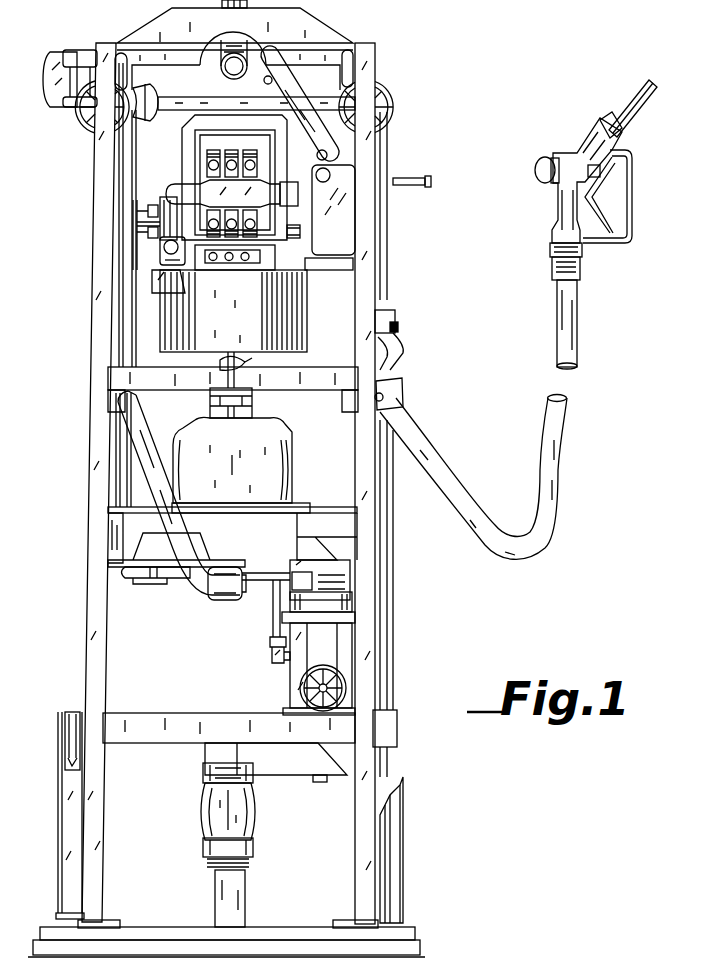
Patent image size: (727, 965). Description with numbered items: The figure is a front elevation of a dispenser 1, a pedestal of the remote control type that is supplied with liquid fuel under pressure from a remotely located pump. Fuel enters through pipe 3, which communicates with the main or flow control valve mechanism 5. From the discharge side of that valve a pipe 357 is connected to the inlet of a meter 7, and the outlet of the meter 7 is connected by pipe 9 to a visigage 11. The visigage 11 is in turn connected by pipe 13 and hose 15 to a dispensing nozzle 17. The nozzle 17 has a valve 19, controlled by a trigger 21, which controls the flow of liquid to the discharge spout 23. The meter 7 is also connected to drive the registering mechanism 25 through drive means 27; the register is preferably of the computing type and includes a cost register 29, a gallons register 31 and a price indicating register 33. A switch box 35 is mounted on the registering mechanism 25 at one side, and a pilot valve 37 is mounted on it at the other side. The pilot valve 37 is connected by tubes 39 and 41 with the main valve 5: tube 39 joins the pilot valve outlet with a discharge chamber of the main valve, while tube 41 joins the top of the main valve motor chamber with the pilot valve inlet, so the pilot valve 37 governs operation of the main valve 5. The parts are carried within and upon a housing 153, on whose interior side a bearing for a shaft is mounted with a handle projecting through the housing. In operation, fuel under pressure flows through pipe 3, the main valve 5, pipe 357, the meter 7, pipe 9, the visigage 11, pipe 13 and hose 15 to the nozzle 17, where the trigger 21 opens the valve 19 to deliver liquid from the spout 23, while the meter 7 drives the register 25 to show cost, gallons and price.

The dispenser 1 is at (80, 505).
The pipe 3 is at (243, 890).
The main or flow control valve mechanism 5 is at (293, 674).
The meter 7 is at (300, 446).
The pipe 9 is at (142, 420).
The visigage 11 is at (55, 100).
The pipe 13 is at (173, 100).
The hose 15 is at (430, 448).
The dispensing nozzle 17 is at (590, 224).
The valve 19 is at (562, 153).
The trigger 21 is at (610, 225).
The discharge spout 23 is at (640, 115).
The registering mechanism 25 is at (187, 122).
The drive means 27 is at (247, 402).
The cost register 29 is at (210, 157).
The gallons register 31 is at (300, 230).
The price indicating register 33 is at (260, 257).
The switch box 35 is at (350, 235).
The pilot valve 37 is at (150, 247).
The tube 39 is at (137, 203).
The tube 41 is at (143, 227).
The housing 153 is at (403, 817).
The pipe 357 is at (343, 578).